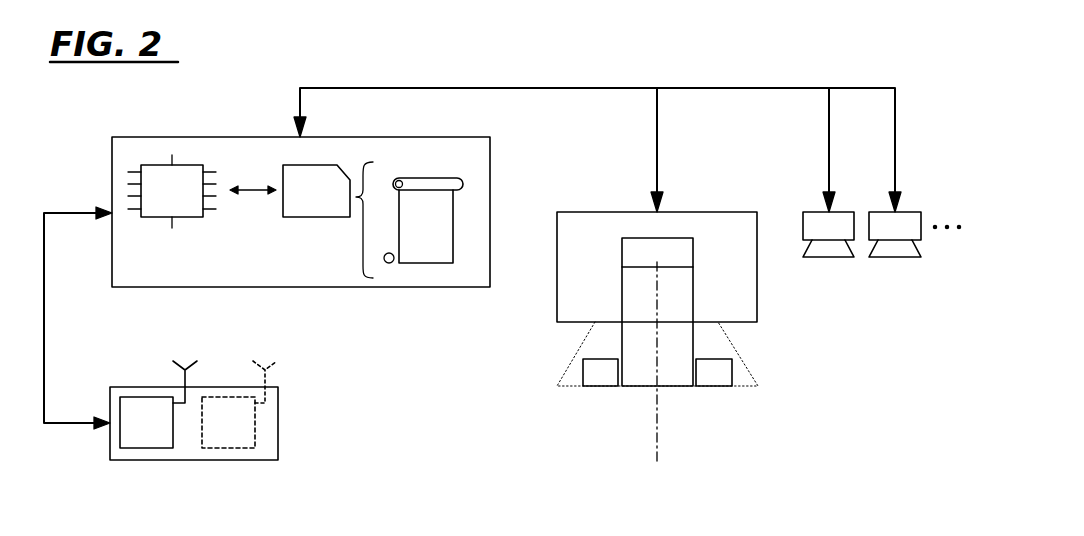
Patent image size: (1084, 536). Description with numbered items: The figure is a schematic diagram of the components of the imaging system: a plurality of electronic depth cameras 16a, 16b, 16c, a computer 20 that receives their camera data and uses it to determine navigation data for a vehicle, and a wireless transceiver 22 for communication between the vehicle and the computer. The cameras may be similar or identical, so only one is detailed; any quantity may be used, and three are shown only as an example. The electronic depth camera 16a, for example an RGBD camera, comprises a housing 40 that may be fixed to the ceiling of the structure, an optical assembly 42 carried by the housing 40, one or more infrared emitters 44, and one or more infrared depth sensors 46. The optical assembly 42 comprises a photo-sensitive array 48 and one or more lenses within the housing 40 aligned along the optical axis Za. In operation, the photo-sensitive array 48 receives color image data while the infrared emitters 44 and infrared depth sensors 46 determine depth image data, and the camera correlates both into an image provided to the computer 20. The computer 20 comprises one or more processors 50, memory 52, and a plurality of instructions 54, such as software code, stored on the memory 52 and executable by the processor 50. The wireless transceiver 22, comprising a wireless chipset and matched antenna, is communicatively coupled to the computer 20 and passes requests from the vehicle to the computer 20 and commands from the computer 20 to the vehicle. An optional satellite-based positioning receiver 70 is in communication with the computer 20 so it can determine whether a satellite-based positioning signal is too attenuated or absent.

The computer 20 is at (224, 294).
The processor 50 is at (172, 191).
The memory 52 is at (316, 191).
The instructions 54 is at (423, 220).
The wireless transceiver 22 is at (158, 404).
The satellite-based positioning receiver 70 is at (239, 404).
The housing 40 is at (668, 315).
The electronic depth camera 16a is at (594, 197).
The electronic depth camera 16b is at (790, 196).
The electronic depth camera 16c is at (873, 190).
The photo-sensitive array 48 is at (693, 252).
The optical assembly 42 is at (608, 302).
The infrared emitter 44 is at (595, 388).
The infrared depth sensor 46 is at (718, 388).
The optical axis Za is at (657, 428).